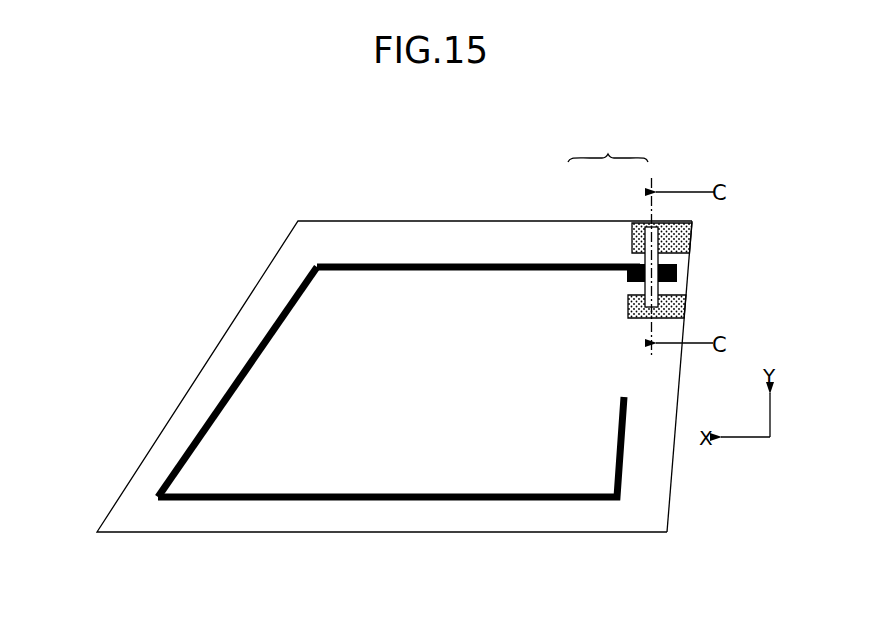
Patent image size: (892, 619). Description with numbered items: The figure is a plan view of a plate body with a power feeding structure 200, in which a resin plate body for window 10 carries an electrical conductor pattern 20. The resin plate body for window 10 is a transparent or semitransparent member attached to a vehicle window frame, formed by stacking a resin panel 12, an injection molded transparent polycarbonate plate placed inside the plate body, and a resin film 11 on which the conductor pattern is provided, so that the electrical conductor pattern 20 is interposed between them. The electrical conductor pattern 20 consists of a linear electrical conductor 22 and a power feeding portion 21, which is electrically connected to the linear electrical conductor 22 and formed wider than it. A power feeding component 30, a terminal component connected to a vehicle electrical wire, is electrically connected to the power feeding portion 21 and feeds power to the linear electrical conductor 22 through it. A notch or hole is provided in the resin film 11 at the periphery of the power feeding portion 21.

The plate body with power feeding structure 200 is at (208, 156).
The resin plate body for window 10 is at (397, 232).
The resin film 11 is at (672, 364).
The electrical conductor pattern 20 is at (608, 145).
The linear electrical conductor 22 is at (581, 262).
The power feeding portion 21 is at (629, 258).
The resin panel 12 is at (679, 238).
The power feeding component 30 is at (655, 288).